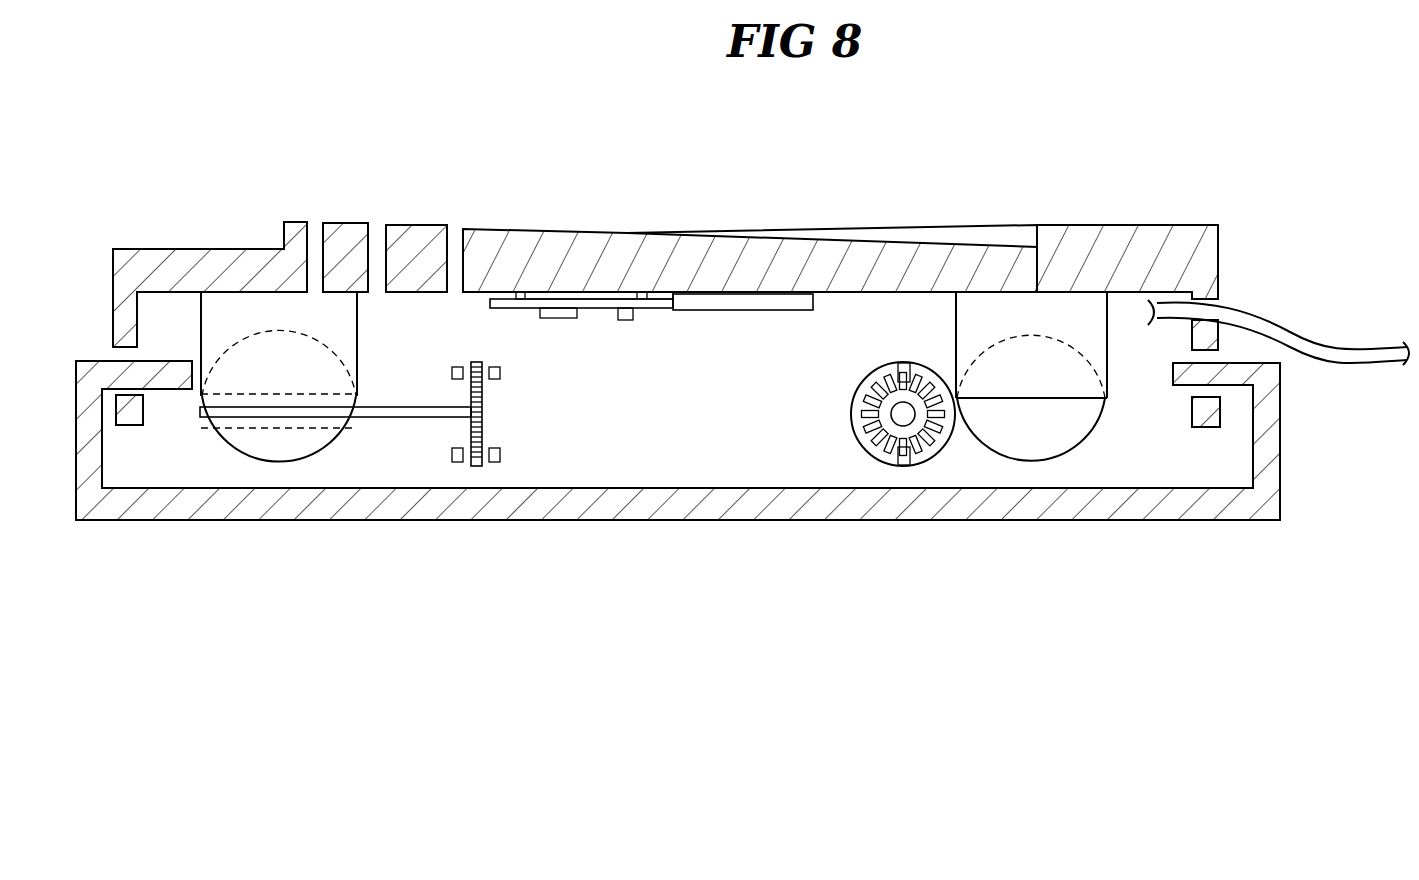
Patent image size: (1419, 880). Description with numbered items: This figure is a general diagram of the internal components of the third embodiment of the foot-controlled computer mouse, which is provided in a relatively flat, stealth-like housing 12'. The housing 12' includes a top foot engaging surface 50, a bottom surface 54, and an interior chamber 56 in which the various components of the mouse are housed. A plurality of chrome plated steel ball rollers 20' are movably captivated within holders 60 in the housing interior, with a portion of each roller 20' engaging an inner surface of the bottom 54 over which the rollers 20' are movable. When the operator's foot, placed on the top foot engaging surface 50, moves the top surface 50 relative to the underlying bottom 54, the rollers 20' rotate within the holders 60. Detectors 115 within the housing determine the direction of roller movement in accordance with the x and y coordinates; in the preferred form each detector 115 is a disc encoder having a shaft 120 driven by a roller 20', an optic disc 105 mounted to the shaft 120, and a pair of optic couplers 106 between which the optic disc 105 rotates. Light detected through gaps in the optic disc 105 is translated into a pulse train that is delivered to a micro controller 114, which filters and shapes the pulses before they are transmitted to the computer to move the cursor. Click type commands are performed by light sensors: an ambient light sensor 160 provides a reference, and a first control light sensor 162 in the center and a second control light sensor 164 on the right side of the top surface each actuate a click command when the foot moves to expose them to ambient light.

The housing 12' is at (1127, 222).
The rollers 20' is at (653, 476).
The top foot engaging surface 50 is at (627, 232).
The bottom surface 54 is at (705, 518).
The interior chamber 56 is at (672, 417).
The holders 60 is at (236, 316).
The optic disc 105 is at (482, 395).
The optic couplers 106 is at (455, 463).
The micro controller 114 is at (697, 310).
The movement detector means 115 is at (503, 428).
The shaft 120 is at (380, 418).
The ambient light sensor 160 is at (313, 223).
The first control light sensor 162 is at (380, 223).
The second control light sensor 164 is at (455, 225).